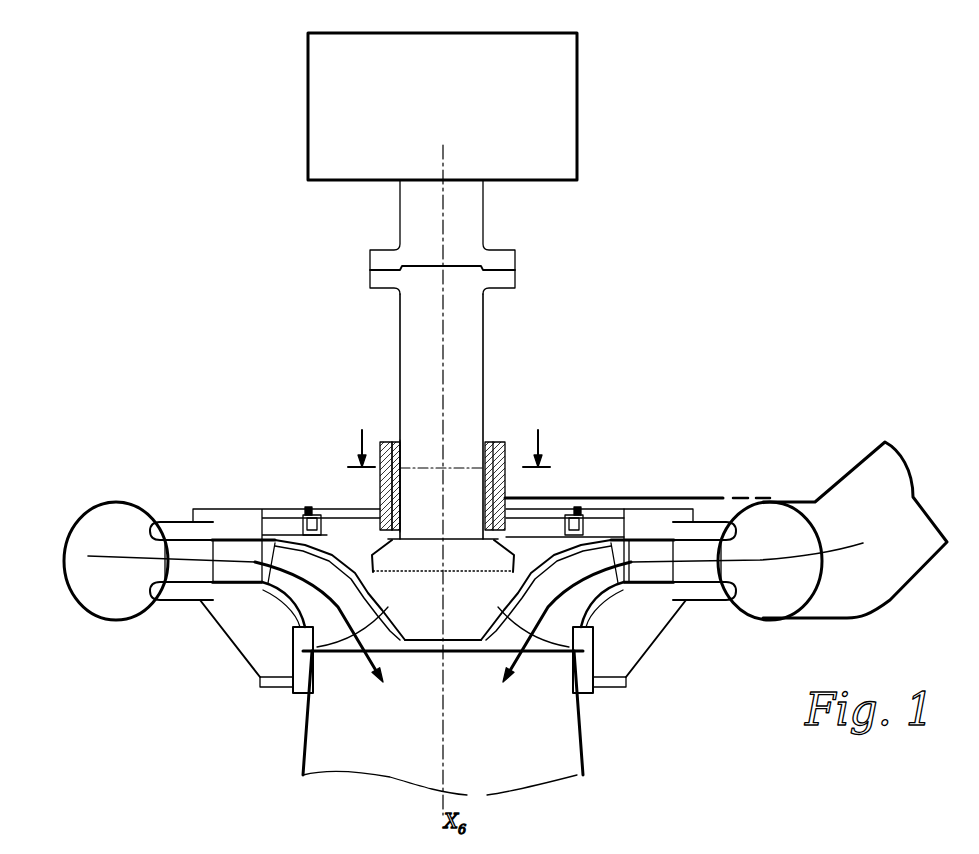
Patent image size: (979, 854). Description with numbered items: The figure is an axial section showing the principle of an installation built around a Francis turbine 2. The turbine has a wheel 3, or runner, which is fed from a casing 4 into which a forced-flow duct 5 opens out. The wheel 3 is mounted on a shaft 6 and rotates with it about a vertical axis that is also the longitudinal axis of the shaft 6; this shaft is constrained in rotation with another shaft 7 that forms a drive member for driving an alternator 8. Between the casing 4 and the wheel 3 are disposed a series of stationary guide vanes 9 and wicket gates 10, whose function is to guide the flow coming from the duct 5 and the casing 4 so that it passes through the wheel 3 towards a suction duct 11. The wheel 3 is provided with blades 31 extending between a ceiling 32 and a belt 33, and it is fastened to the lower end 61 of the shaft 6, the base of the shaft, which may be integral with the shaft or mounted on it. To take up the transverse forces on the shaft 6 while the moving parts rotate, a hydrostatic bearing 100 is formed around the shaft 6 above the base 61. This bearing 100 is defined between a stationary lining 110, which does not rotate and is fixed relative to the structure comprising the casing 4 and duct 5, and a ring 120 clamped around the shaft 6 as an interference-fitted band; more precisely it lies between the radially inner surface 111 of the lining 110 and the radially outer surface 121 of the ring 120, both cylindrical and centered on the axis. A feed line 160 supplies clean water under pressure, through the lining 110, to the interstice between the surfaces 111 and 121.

The alternator 8 is at (442, 106).
The shaft 7 is at (475, 202).
The shaft 6 is at (475, 320).
The Francis turbine 2 is at (566, 448).
The hydrostatic bearing 100 is at (500, 432).
The stationary lining 110 is at (510, 483).
The radially inner surface of the lining 111 is at (405, 483).
The ring 120 is at (388, 487).
The radially outer surface of the ring 121 is at (380, 487).
The feed line 160 is at (672, 495).
The wicket gates 10 is at (237, 547).
The ceiling 32 is at (317, 502).
The belt 33 is at (287, 600).
The blades 31 is at (323, 645).
The wheel 3 is at (417, 625).
The lower end of the shaft 61 is at (462, 555).
The suction duct 11 is at (582, 748).
The stationary guide vanes 9 is at (698, 593).
The casing 4 is at (763, 622).
The forced-flow duct 5 is at (893, 600).